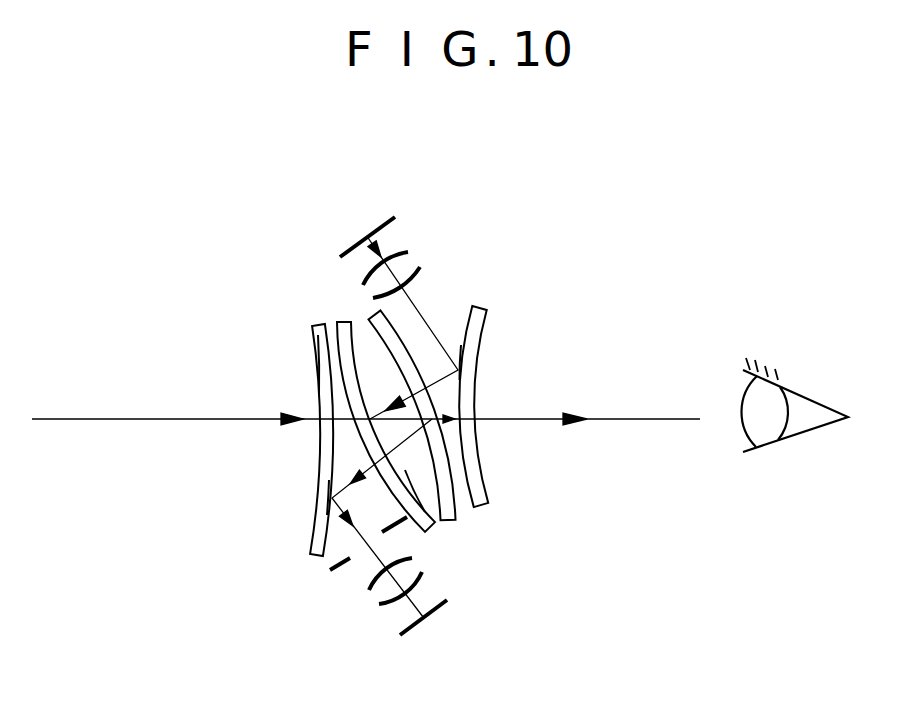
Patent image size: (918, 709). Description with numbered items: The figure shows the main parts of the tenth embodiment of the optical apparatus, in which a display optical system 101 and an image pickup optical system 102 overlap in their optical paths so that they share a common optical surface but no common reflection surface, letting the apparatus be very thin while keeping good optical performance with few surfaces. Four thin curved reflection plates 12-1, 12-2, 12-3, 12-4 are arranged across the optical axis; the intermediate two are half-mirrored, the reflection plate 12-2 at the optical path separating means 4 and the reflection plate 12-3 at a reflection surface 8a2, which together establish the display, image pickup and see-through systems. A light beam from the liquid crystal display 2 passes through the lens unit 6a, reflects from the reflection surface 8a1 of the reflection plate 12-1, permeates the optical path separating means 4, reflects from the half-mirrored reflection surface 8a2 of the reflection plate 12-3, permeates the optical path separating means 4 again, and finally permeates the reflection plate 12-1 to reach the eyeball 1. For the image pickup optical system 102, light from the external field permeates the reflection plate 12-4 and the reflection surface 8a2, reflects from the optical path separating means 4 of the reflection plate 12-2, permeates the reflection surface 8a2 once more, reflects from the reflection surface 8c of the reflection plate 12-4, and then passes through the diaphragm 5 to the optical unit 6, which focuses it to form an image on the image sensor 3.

The eyeball 1 is at (792, 440).
The liquid crystal display 2 is at (388, 220).
The image sensor 3 is at (445, 603).
The optical path separating means 4 is at (318, 363).
The diaphragm 5 is at (333, 572).
The optical unit 6 is at (375, 598).
The lens unit 6a is at (413, 258).
The reflection surface 8a1 is at (465, 353).
The reflection surface 8a2 is at (417, 493).
The reflection surface 8c is at (318, 478).
The reflection plate 12-1 is at (483, 310).
The reflection plate 12-2 is at (393, 333).
The reflection plate 12-3 is at (341, 322).
The reflection plate 12-4 is at (313, 540).
The display optical system 101 is at (508, 315).
The image pickup optical system 102 is at (307, 444).